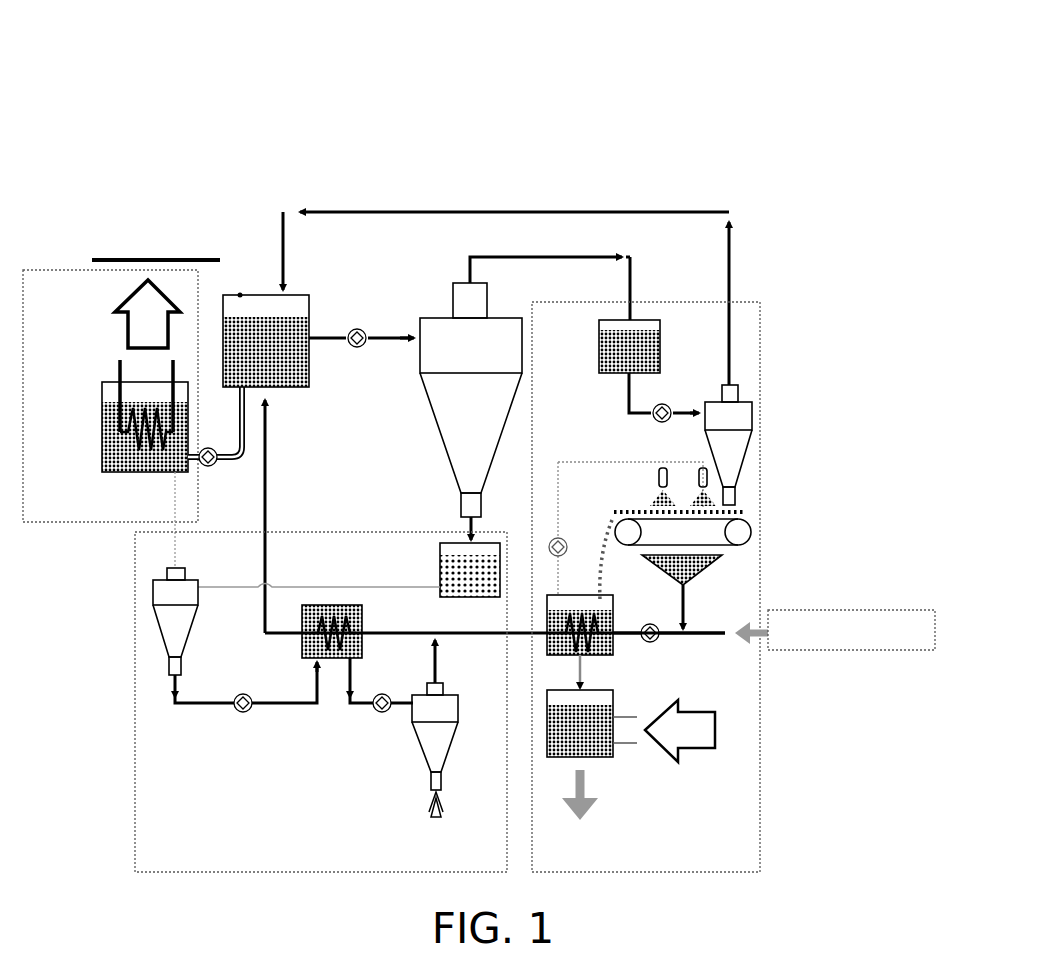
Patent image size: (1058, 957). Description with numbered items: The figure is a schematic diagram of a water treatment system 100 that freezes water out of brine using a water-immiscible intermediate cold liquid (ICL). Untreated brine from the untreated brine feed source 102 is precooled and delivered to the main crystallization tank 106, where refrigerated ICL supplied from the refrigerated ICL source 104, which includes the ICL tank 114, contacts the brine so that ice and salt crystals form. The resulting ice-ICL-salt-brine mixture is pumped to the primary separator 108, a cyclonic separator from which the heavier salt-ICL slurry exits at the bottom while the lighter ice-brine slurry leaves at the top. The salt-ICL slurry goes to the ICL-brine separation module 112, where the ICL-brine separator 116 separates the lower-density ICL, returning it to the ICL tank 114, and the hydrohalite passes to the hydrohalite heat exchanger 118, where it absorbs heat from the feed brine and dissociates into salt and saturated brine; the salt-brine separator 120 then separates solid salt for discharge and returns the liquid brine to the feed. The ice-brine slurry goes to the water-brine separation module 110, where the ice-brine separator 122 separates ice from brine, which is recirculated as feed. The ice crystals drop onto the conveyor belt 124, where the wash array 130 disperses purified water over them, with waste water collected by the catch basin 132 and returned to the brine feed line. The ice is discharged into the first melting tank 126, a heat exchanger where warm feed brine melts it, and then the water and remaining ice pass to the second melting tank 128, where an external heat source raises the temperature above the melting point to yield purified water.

The water treatment system 100 is at (381, 92).
The untreated brine feed source 102 is at (851, 630).
The refrigerated ICL source 104 is at (72, 268).
The main crystallization tank 106 is at (240, 293).
The primary separator 108 is at (452, 412).
The water-brine separation module 110 is at (762, 737).
The ICL-brine separation module 112 is at (135, 695).
The ICL tank 114 is at (100, 385).
The ICL-brine separator 116 is at (155, 600).
The hydrohalite heat exchanger 118 is at (298, 618).
The salt-brine separator 120 is at (422, 730).
The ice-brine separator 122 is at (738, 415).
The conveyor belt 124 is at (742, 548).
The first melting tank 126 is at (608, 616).
The second melting tank 128 is at (588, 715).
The wash array 130 is at (655, 480).
The catch basin 132 is at (706, 564).